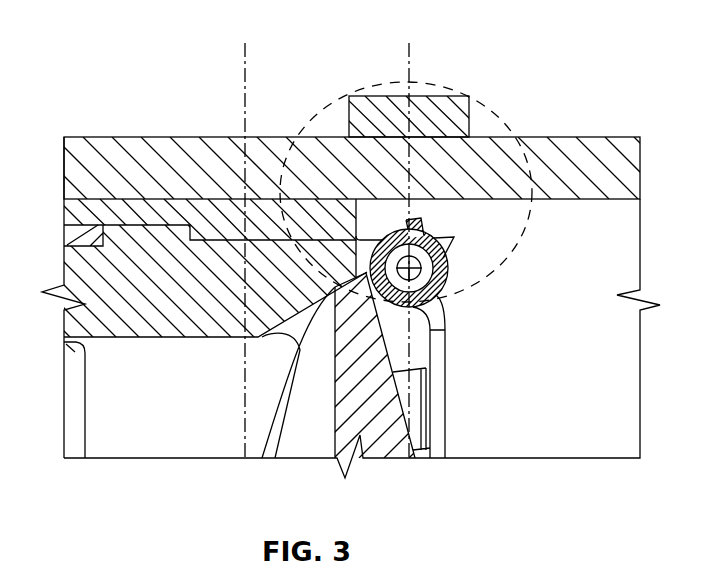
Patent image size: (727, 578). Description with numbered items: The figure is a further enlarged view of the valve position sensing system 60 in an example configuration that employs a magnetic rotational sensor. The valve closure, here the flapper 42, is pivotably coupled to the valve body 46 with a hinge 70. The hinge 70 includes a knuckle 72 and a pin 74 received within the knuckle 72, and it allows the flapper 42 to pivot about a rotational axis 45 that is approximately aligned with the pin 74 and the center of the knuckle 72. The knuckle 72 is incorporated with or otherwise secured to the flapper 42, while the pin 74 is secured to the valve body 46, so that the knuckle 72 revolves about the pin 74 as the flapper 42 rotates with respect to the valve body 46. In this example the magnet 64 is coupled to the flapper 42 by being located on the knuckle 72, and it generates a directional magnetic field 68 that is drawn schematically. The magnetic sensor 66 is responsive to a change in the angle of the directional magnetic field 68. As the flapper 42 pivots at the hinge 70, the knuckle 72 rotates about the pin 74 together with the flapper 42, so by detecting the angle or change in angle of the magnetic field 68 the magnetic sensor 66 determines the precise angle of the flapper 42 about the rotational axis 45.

The flapper 42 is at (447, 423).
The rotational axis 45 is at (435, 300).
The valve body 46 is at (202, 160).
The valve position sensing system 60 is at (510, 61).
The magnet 64 is at (418, 213).
The magnetic sensor 66 is at (452, 96).
The directional magnetic field 68 is at (524, 110).
The hinge 70 is at (418, 178).
The knuckle 72 is at (440, 236).
The pin 74 is at (413, 268).